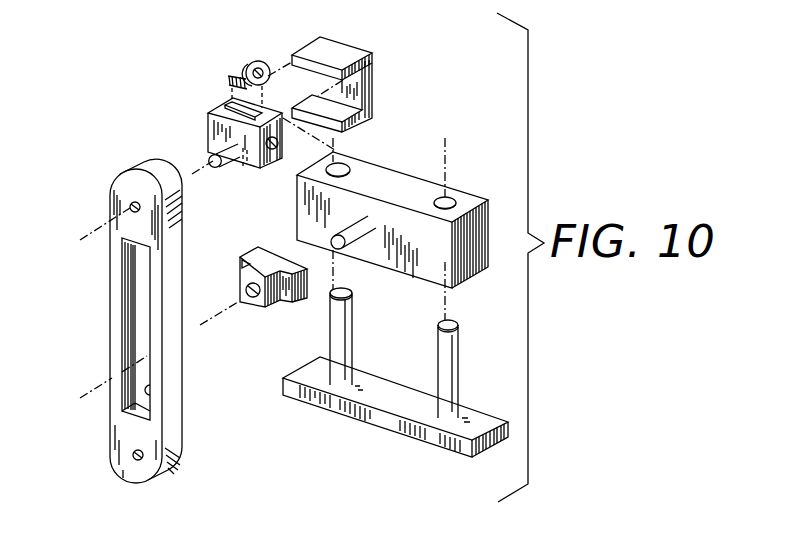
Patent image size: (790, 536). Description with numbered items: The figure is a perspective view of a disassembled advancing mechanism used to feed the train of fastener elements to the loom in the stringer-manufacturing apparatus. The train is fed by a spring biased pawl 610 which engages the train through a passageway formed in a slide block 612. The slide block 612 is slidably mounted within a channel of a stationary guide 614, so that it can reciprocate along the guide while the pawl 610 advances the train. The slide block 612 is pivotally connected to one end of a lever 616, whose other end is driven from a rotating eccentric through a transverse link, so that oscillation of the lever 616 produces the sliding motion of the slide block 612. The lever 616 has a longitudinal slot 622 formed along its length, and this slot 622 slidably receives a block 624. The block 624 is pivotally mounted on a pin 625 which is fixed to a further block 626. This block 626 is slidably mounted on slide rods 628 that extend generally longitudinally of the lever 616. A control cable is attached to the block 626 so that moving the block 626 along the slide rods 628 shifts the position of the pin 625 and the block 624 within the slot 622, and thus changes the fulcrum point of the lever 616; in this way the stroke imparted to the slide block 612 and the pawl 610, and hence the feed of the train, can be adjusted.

The spring biased pawl 610 is at (262, 61).
The slide block 612 is at (213, 127).
The stationary guide 614 is at (374, 62).
The lever 616 is at (163, 193).
The longitudinal slot 622 is at (153, 393).
The block 624 is at (285, 302).
The pin 625 is at (355, 233).
The block 626 is at (463, 258).
The slide rods 628 is at (447, 345).